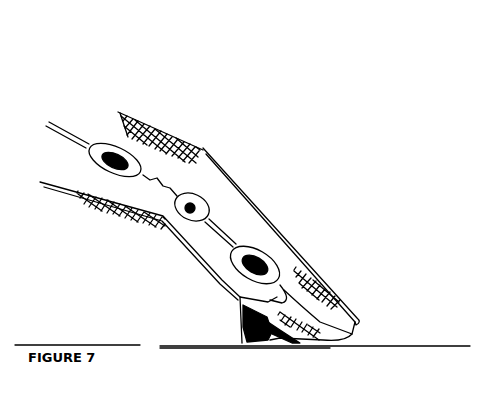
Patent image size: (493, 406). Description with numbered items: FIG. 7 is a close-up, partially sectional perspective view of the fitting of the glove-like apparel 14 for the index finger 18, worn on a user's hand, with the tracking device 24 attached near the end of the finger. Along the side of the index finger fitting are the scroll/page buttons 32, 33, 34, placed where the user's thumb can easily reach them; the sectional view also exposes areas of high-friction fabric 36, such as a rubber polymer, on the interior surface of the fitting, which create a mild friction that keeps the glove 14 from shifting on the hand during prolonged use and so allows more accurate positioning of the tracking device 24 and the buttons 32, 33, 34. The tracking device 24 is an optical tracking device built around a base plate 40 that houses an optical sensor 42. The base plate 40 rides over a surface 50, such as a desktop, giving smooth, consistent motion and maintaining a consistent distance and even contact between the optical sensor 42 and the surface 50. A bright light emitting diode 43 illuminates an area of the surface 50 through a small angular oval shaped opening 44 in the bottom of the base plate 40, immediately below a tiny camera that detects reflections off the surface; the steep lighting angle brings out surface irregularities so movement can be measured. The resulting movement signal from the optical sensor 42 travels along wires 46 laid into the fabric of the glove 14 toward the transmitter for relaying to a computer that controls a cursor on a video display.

The glove-like apparel 14 is at (130, 110).
The index finger 18 is at (333, 330).
The tracking device 24 is at (233, 318).
The scroll/page button 32 is at (197, 197).
The scroll/page button 33 is at (108, 157).
The scroll/page button 34 is at (258, 257).
The high-friction fabric 36 is at (172, 140).
The base plate 40 is at (245, 328).
The optical sensor 42 is at (260, 330).
The light emitting diode 43 is at (268, 328).
The angular oval shaped opening 44 is at (293, 343).
The wires 46 is at (62, 126).
The surface 50 is at (377, 345).